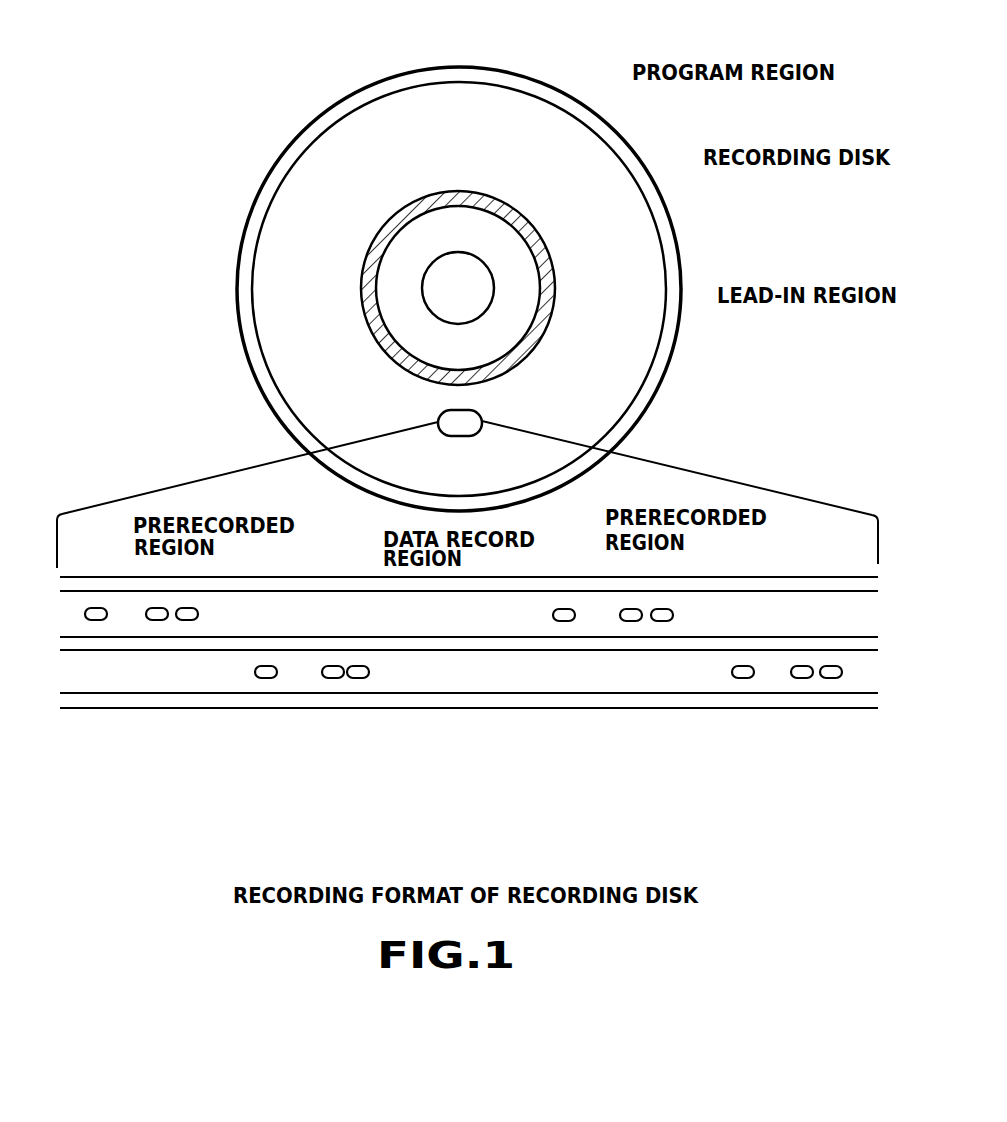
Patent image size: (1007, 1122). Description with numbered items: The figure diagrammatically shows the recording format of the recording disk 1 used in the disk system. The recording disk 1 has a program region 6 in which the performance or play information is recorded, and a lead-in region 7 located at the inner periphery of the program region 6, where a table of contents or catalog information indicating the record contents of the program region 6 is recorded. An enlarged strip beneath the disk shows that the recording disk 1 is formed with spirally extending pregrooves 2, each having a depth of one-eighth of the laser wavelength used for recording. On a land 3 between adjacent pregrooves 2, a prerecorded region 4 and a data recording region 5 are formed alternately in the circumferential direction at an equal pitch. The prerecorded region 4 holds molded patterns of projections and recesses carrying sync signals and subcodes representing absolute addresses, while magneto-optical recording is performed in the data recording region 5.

The recording disk 1 is at (678, 219).
The pregrooves 2 is at (862, 697).
The land 3 is at (700, 663).
The prerecorded region 4 is at (185, 607).
The data recording region 5 is at (369, 614).
The program region 6 is at (587, 184).
The lead-in region 7 is at (553, 283).